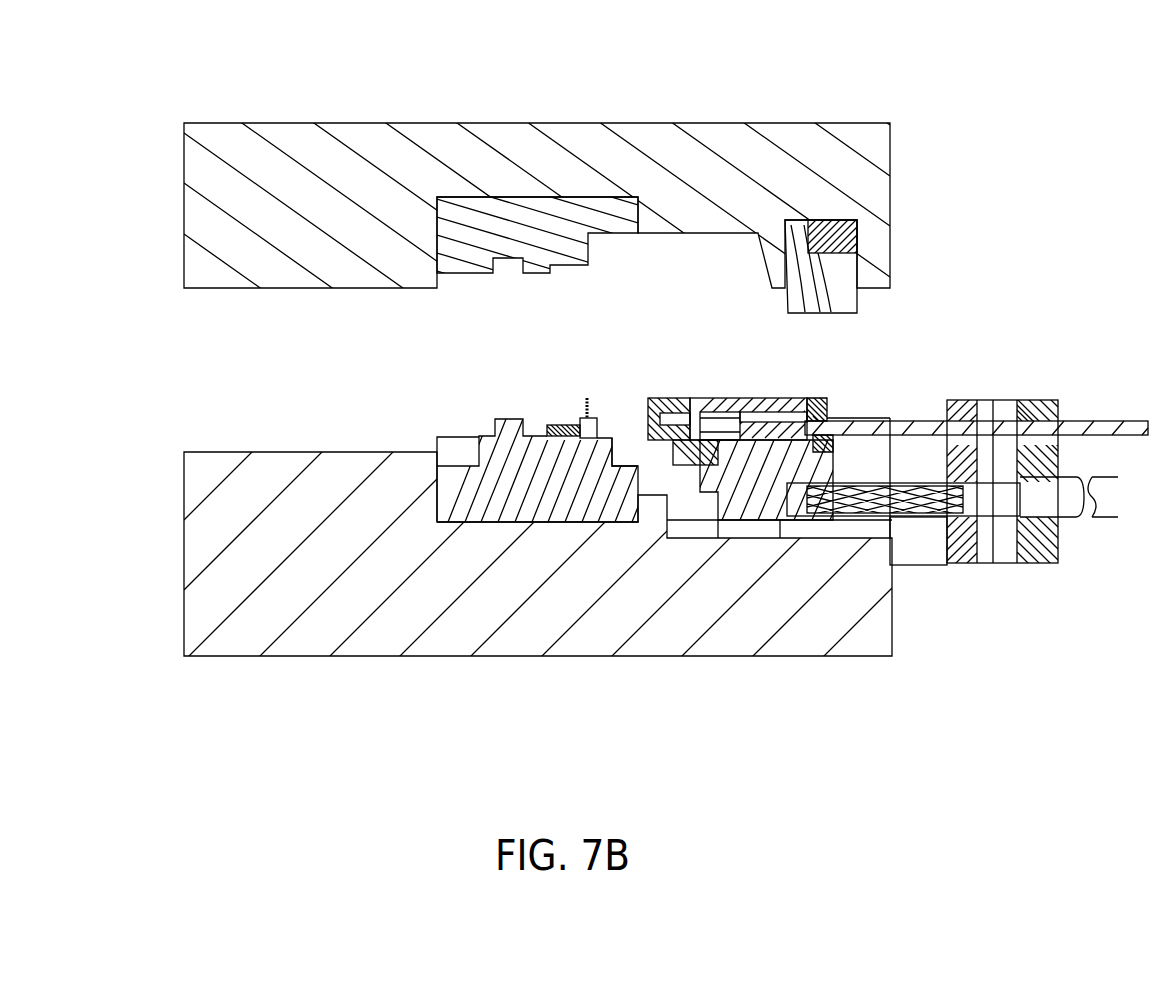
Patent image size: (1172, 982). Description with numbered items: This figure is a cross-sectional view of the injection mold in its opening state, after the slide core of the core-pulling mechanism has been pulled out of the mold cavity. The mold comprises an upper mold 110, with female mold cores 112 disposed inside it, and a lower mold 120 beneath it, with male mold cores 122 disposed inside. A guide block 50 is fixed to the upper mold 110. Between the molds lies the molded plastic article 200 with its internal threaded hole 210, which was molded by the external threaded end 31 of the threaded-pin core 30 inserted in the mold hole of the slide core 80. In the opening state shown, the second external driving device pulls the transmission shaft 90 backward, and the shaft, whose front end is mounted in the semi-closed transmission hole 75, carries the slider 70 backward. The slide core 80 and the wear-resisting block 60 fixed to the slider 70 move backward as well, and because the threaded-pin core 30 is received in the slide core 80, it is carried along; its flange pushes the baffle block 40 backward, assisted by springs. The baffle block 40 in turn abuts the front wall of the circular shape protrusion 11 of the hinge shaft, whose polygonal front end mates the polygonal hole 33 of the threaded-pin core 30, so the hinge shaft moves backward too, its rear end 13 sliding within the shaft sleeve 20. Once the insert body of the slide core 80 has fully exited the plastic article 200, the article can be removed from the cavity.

The upper mold 110 is at (216, 187).
The female mold cores 112 is at (473, 225).
The guide block 50 is at (833, 225).
The lower mold 120 is at (195, 605).
The male mold cores 122 is at (473, 500).
The plastic article 200 is at (548, 425).
The internal threaded hole 210 is at (609, 437).
The threaded-pin core 30 is at (700, 442).
The external threaded end 31 is at (658, 398).
The polygonal hole 33 is at (697, 462).
The baffle block 40 is at (742, 412).
The slide core 80 is at (673, 397).
The wear-resisting block 60 is at (817, 397).
The rear end 13 is at (900, 421).
The shaft sleeve 20 is at (1015, 400).
The transmission shaft 90 is at (912, 500).
The slider 70 is at (733, 510).
The circular shape protrusion 11 is at (782, 540).
The semi-closed transmission hole 75 is at (790, 538).